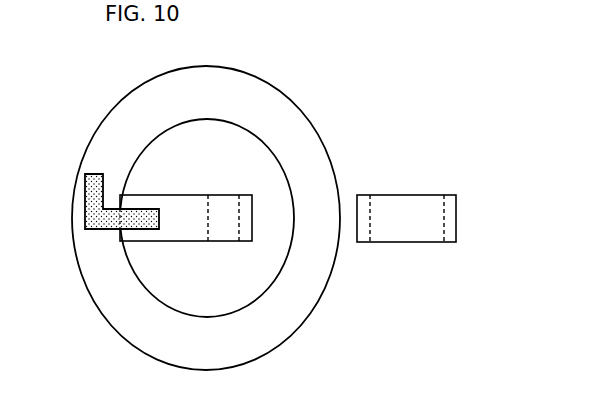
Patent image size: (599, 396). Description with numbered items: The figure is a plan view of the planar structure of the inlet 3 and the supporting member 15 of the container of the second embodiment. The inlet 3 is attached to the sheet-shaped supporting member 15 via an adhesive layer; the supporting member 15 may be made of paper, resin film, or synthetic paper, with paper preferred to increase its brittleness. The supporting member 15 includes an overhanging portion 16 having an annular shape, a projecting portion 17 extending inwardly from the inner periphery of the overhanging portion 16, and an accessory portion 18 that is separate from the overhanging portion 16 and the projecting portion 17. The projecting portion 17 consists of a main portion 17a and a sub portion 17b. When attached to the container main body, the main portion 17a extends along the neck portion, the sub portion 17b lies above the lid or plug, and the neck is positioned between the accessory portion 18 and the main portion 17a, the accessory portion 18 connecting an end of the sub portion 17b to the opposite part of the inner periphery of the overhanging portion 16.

The inlet 3 is at (95, 193).
The supporting member 15 is at (396, 279).
The overhanging portion 16 is at (267, 80).
The projecting portion 17 is at (186, 222).
The main portion 17a is at (192, 242).
The sub portion 17b is at (222, 242).
The accessory portion 18 is at (405, 194).